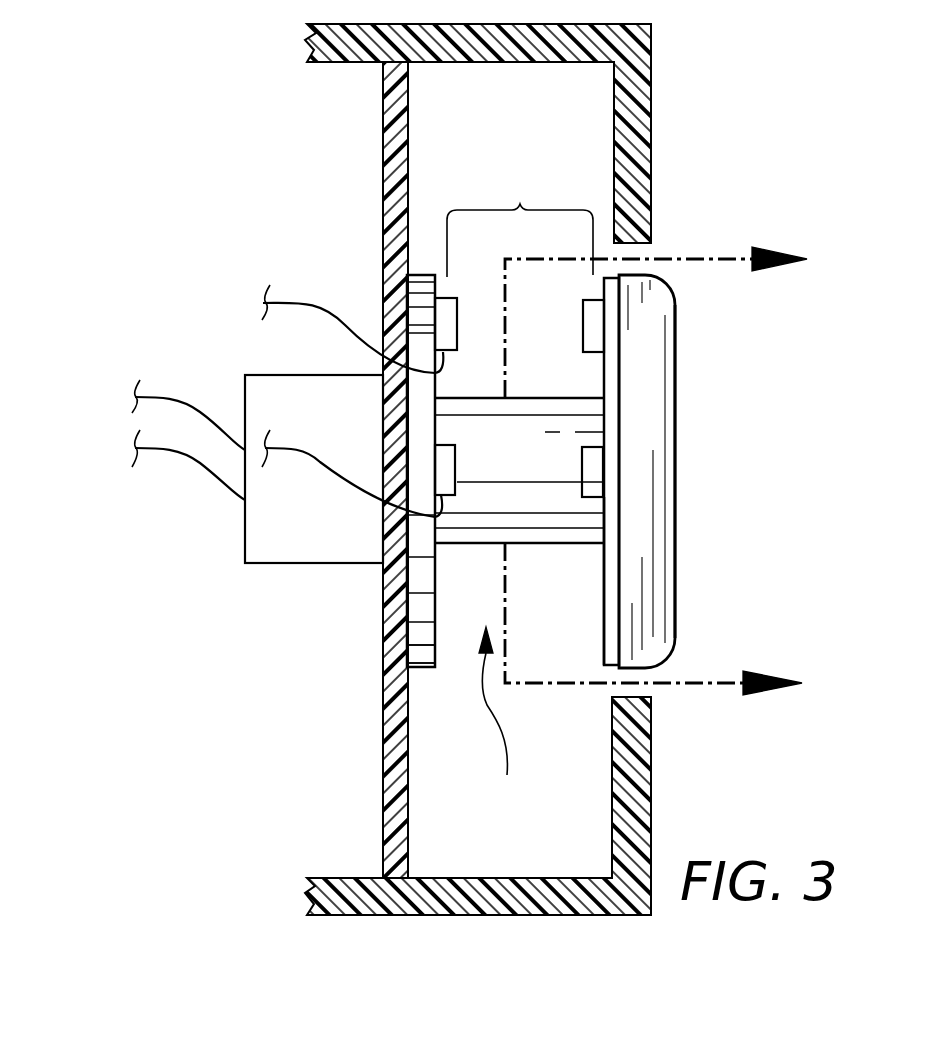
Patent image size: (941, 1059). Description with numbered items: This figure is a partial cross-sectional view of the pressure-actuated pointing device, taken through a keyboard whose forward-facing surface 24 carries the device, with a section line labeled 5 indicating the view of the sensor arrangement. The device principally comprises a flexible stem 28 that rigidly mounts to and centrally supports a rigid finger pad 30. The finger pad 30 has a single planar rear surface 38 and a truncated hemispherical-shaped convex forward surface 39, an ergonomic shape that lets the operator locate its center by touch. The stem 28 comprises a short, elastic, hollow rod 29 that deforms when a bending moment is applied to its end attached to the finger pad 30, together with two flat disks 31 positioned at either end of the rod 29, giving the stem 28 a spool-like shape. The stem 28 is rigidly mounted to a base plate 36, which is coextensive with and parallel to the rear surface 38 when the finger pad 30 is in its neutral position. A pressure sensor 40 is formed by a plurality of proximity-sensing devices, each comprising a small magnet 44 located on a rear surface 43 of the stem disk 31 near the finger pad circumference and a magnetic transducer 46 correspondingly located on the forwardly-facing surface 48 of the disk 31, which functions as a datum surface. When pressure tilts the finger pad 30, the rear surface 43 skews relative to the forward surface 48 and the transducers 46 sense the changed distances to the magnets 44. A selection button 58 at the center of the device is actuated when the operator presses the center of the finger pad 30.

The forward-facing surface 24 is at (650, 775).
The flexible stem 28 is at (502, 718).
The hollow rod 29 is at (530, 503).
The finger pad 30 is at (643, 400).
The flat disk 31 is at (415, 575).
The base plate 36 is at (381, 772).
The rear surface 38 is at (610, 550).
The forward surface 39 is at (675, 447).
The pressure sensor 40 is at (520, 226).
The rear surface of the stem disk 43 is at (594, 600).
The magnet 44 is at (598, 326).
The magnetic transducer 46 is at (457, 322).
The forwardly-facing surface 48 is at (433, 640).
The selection button 58 is at (283, 547).
The section line 5- 5 is at (673, 473).